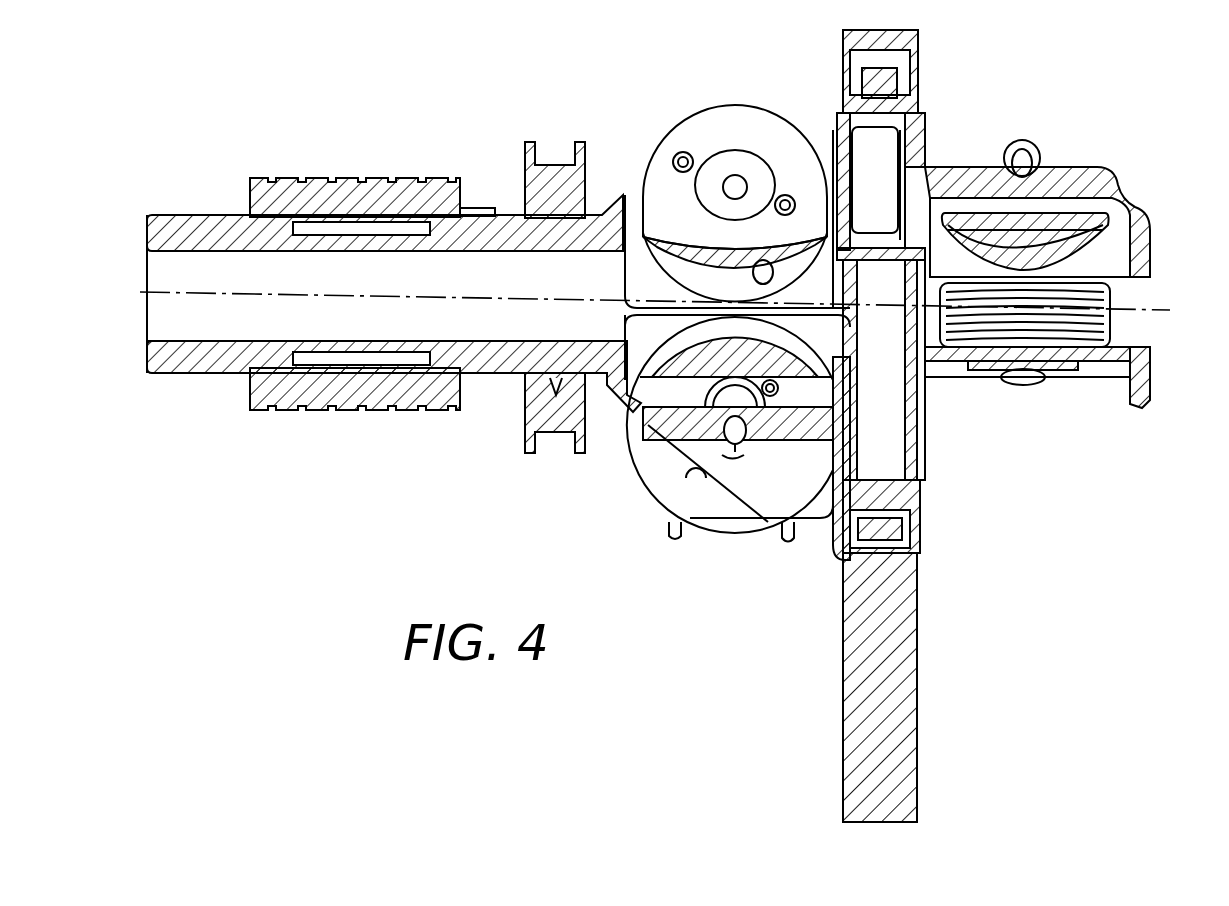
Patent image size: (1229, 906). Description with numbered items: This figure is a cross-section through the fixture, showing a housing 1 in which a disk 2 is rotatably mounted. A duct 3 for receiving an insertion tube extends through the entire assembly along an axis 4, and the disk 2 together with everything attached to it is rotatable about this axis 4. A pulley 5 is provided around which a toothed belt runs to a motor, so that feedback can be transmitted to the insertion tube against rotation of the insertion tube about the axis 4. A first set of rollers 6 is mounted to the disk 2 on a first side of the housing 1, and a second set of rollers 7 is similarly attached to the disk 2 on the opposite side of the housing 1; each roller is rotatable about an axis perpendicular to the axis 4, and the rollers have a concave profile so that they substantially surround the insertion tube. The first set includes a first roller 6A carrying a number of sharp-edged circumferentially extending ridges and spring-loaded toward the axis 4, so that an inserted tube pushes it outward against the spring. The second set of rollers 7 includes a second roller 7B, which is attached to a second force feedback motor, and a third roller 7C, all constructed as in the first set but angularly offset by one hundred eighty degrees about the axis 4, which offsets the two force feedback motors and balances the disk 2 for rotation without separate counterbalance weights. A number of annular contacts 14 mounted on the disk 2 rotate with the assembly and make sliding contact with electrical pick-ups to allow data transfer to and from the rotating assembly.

The housing 1 is at (884, 690).
The disk 2 is at (898, 110).
The duct 3 is at (228, 252).
The axis 4 is at (250, 300).
The pulley 5 is at (555, 437).
The first set of rollers 6 is at (1103, 118).
The first roller 6A is at (1108, 275).
The second set of rollers 7 is at (815, 93).
The second roller 7B is at (672, 143).
The third roller 7C is at (662, 465).
The annular contacts 14 is at (387, 180).